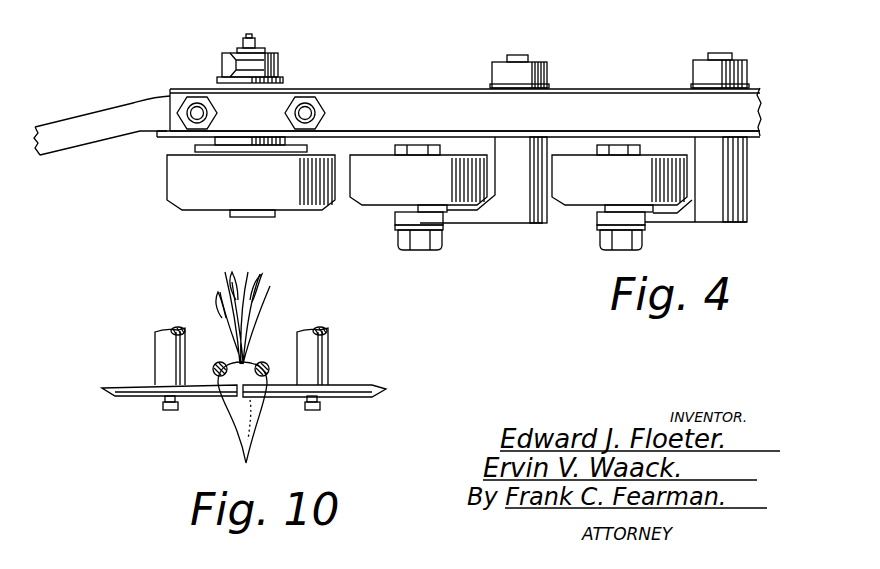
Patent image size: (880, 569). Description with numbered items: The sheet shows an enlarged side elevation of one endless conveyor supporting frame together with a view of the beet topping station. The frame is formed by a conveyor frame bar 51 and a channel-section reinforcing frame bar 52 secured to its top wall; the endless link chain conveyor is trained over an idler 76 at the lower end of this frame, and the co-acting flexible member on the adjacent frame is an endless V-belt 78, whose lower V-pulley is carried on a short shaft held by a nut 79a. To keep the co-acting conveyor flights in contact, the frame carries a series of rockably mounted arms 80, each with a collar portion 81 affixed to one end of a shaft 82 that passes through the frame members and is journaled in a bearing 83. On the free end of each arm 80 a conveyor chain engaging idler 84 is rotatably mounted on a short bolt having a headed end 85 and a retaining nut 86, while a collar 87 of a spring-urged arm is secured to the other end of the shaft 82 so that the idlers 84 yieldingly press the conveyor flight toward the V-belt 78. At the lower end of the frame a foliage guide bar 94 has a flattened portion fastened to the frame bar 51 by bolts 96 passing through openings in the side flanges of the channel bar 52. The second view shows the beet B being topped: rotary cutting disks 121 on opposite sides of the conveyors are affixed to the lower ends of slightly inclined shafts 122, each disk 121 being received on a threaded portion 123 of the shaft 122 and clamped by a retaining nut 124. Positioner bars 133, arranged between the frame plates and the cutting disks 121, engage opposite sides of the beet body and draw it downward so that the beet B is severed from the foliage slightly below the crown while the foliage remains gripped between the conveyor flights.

In FIG. 4, the conveyor frame bar 51 is at (352, 132).
In FIG. 4, the reinforcing frame bar 52 is at (420, 103).
In FIG. 4, the idler 76 is at (173, 183).
In FIG. 4, the endless V-belt 78 is at (258, 50).
In FIG. 4, the nut 79a is at (282, 65).
In FIG. 4, the rockably mounted arm 80 is at (477, 218).
In FIG. 4, the collar portion 81 is at (533, 218).
In FIG. 4, the shaft 82 is at (526, 56).
In FIG. 4, the bearing 83 is at (550, 85).
In FIG. 4, the conveyor chain engaging idler 84 is at (378, 190).
In FIG. 4, the headed end 85 is at (432, 148).
In FIG. 4, the retaining nut 86 is at (417, 250).
In FIG. 4, the collar 87 is at (547, 72).
In FIG. 4, the guide bar 94 is at (88, 137).
In FIG. 4, the bolt 96 is at (197, 108).
In FIG. 10, the rotary cutting disk 121 is at (118, 395).
In FIG. 10, the shaft 122 is at (160, 333).
In FIG. 10, the threaded portion 123 is at (175, 407).
In FIG. 10, the retaining nut 124 is at (165, 401).
In FIG. 10, the positioner bar 133 is at (220, 363).
In FIG. 10, the beet B is at (240, 420).